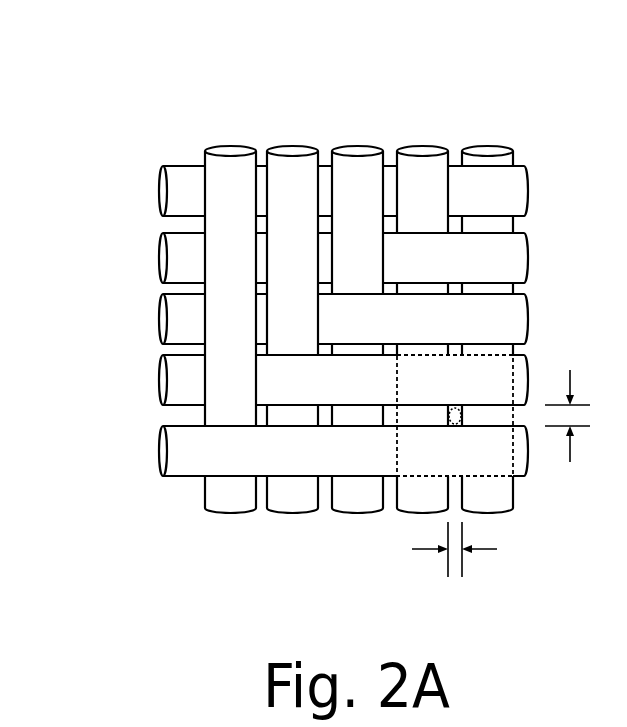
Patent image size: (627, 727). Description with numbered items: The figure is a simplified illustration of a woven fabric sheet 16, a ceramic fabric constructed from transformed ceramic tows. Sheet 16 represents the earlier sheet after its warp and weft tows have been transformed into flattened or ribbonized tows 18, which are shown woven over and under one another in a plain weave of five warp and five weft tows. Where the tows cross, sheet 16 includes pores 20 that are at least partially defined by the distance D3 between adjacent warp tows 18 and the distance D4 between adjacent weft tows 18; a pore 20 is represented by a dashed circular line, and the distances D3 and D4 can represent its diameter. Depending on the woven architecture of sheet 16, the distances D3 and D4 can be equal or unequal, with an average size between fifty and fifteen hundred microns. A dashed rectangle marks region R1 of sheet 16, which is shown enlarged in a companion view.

The woven fabric sheet 16 is at (330, 280).
The flattened or ribbonized tows 18 is at (528, 187).
The pores 20 is at (467, 427).
The region R1 is at (390, 469).
The distance between adjacent warp tows D3 is at (454, 565).
The distance between adjacent weft tows D4 is at (567, 399).